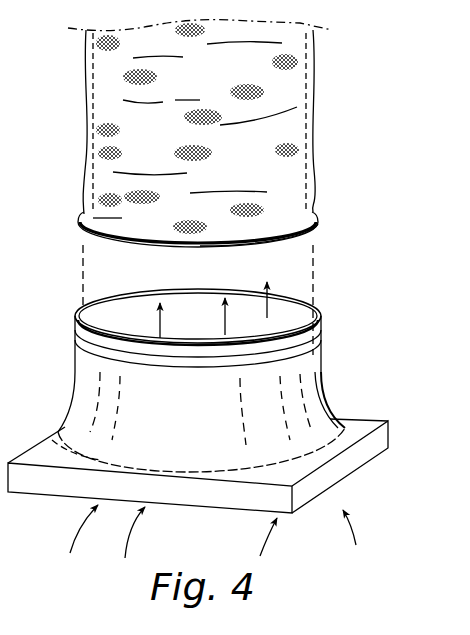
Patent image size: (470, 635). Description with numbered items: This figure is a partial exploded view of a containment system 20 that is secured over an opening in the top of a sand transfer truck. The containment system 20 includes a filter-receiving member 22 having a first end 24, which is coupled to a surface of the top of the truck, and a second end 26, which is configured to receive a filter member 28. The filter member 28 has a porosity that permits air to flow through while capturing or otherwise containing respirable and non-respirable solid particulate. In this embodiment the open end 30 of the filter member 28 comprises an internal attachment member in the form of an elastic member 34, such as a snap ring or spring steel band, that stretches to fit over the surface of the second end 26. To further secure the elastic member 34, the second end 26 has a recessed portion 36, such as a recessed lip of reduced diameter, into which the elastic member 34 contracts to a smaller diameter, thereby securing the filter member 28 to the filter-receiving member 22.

The containment system 20 is at (338, 258).
The filter-receiving member 22 is at (315, 397).
The first end 24 is at (347, 465).
The second end 26 is at (320, 316).
The filter member 28 is at (303, 131).
The open end 30 is at (85, 236).
The elastic member 34 is at (303, 241).
The recessed portion 36 is at (318, 343).